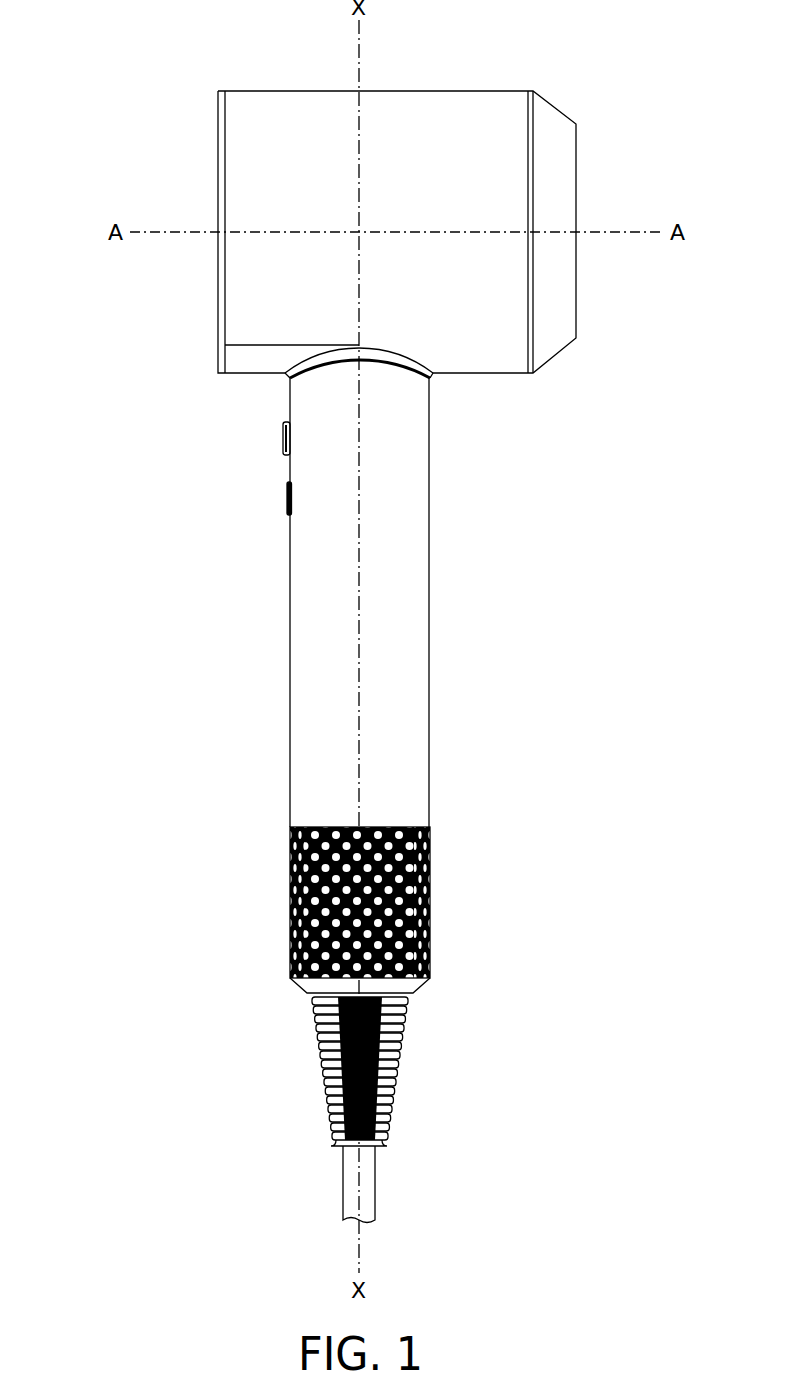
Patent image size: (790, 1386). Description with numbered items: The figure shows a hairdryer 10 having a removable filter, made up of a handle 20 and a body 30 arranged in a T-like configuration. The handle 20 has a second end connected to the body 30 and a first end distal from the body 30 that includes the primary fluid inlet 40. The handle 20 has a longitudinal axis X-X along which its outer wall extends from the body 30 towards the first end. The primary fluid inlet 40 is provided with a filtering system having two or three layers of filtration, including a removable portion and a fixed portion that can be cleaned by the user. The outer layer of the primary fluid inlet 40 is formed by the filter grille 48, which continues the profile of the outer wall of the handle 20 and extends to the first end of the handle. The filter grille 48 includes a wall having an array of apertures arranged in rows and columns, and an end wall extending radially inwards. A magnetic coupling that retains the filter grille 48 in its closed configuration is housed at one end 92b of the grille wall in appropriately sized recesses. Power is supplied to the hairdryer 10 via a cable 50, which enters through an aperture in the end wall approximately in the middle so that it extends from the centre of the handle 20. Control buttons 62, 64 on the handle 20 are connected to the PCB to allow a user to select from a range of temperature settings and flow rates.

The hairdryer 10 is at (318, 644).
The handle 20 is at (422, 603).
The body 30 is at (448, 93).
The primary fluid inlet 40 is at (366, 921).
The filter grille 48 is at (432, 897).
The cable 50 is at (368, 1176).
The control button 62 is at (283, 438).
The control button 64 is at (287, 498).
The end of the wall 92b is at (433, 979).